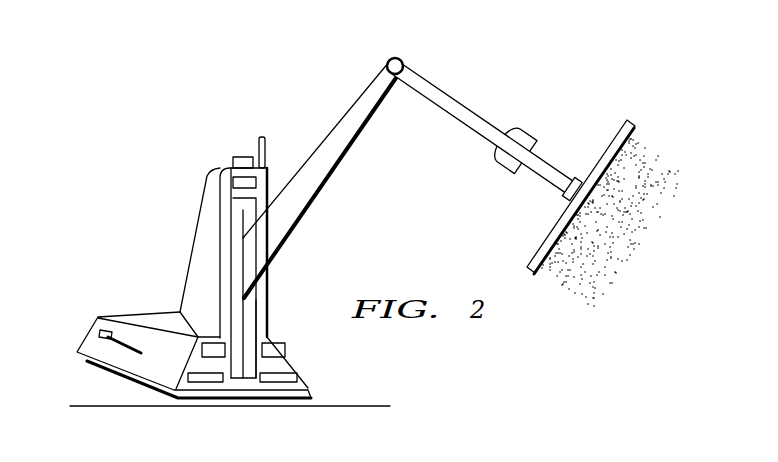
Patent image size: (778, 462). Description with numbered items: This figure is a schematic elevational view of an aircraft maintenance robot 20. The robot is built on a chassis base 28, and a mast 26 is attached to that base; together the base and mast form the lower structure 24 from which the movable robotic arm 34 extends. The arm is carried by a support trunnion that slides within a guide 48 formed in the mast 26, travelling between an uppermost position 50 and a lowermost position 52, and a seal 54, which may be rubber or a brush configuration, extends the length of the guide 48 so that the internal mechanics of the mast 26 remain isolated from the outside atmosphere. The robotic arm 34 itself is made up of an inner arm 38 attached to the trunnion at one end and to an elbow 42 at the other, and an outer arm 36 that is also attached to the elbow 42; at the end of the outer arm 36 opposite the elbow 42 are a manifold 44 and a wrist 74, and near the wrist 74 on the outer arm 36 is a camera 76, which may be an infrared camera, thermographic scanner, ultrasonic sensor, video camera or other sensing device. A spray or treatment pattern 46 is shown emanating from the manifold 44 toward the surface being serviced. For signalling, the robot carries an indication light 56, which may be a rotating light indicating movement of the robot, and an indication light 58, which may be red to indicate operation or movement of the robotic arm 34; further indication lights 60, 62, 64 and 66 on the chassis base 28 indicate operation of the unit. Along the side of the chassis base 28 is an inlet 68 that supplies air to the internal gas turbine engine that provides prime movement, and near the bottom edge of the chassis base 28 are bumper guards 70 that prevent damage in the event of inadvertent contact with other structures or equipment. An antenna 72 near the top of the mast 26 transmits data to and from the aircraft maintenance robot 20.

The aircraft maintenance robot 20 is at (168, 94).
The base assembly 24 is at (80, 240).
The mast 26 is at (161, 247).
The chassis base 28 is at (131, 306).
The movable robotic arm 34 is at (311, 62).
The outer arm 36 is at (461, 102).
The inner arm 38 is at (341, 160).
The elbow 42 is at (400, 58).
The manifold 44 is at (632, 120).
The spray pattern 46 is at (676, 146).
The guide 48 is at (259, 305).
The uppermost position 50 is at (243, 212).
The lowermost position 52 is at (247, 380).
The seal 54 is at (258, 331).
The indication light 56 is at (243, 156).
The indication light 58 is at (233, 182).
The indication light 60 is at (284, 350).
The indication light 62 is at (204, 351).
The indication light 64 is at (208, 381).
The indication light 66 is at (281, 381).
The inlet 68 is at (100, 334).
The bumper guards 70 is at (112, 376).
The antenna 72 is at (262, 136).
The wrist 74 is at (572, 178).
The camera 76 is at (523, 131).